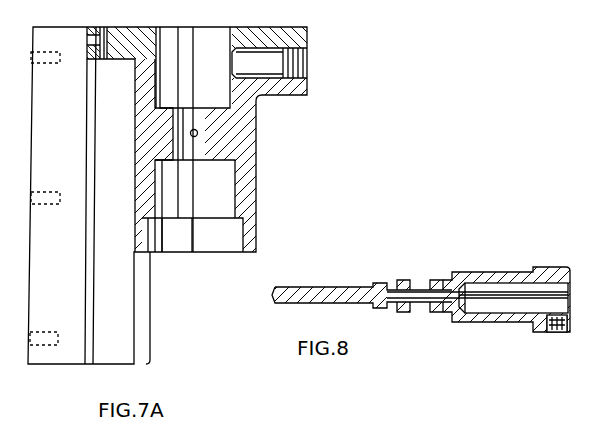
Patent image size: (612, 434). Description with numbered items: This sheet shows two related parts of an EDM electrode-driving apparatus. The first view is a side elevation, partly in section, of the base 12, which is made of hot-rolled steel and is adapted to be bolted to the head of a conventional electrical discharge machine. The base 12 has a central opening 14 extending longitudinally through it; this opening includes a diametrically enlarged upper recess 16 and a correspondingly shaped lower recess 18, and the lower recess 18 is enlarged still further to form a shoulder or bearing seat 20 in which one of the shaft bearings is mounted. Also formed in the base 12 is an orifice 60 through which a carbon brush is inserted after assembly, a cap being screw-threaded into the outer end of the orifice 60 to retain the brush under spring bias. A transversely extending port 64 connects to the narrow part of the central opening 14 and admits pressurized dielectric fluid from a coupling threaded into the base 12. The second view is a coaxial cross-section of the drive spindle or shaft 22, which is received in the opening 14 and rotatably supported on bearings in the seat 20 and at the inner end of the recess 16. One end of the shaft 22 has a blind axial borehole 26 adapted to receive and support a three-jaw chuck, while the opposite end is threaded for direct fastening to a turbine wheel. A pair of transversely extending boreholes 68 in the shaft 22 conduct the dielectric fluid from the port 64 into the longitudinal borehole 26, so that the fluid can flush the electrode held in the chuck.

In FIG. 7A, the base 12 is at (259, 150).
In FIG. 7A, the central opening 14 is at (203, 133).
In FIG. 7A, the upper recess 16 is at (160, 84).
In FIG. 7A, the lower recess 18 is at (155, 185).
In FIG. 7A, the bearing seat 20 is at (141, 232).
In FIG. 7A, the orifice 60 is at (302, 51).
In FIG. 7A, the port 64 is at (190, 128).
In FIG. 8, the drive spindle or shaft 22 is at (561, 268).
In FIG. 8, the blind axial borehole 26 is at (562, 286).
In FIG. 8, the transversely extending boreholes 68 is at (415, 286).